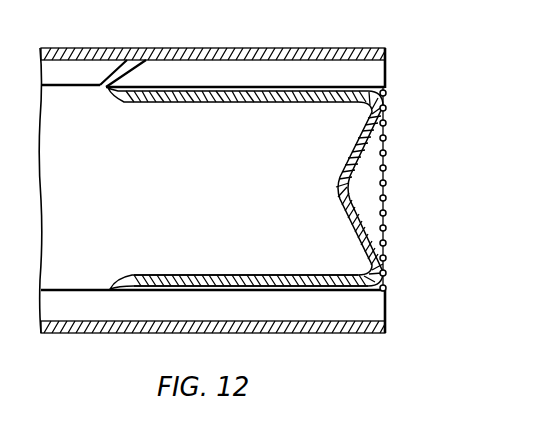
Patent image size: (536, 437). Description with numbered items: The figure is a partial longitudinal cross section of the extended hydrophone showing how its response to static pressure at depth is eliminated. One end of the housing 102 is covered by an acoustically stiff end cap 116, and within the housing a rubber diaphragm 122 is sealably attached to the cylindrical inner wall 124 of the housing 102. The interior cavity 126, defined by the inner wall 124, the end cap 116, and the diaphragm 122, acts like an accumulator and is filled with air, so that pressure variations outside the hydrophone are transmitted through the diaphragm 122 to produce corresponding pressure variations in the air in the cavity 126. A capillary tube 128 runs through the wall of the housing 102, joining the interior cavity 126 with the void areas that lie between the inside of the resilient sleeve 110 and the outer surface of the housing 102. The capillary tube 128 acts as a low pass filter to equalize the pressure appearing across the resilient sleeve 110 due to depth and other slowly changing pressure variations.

The housing 102 is at (388, 78).
The resilient sleeve 110 is at (327, 50).
The end cap 116 is at (386, 139).
The rubber diaphragm 122 is at (271, 104).
The cylindrical inner wall 124 is at (89, 288).
The interior cavity 126 is at (213, 200).
The capillary tube 128 is at (102, 86).